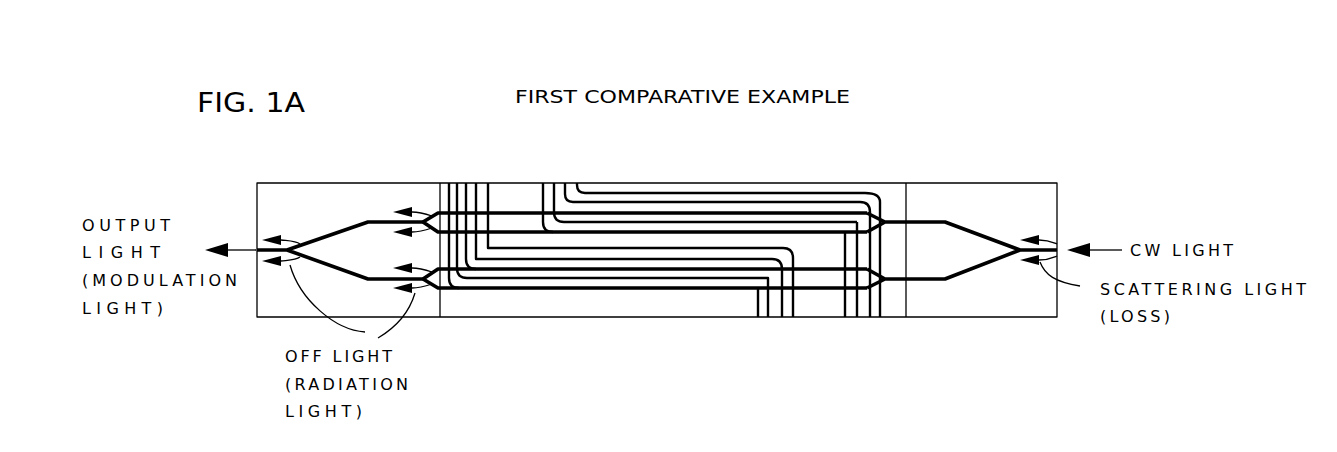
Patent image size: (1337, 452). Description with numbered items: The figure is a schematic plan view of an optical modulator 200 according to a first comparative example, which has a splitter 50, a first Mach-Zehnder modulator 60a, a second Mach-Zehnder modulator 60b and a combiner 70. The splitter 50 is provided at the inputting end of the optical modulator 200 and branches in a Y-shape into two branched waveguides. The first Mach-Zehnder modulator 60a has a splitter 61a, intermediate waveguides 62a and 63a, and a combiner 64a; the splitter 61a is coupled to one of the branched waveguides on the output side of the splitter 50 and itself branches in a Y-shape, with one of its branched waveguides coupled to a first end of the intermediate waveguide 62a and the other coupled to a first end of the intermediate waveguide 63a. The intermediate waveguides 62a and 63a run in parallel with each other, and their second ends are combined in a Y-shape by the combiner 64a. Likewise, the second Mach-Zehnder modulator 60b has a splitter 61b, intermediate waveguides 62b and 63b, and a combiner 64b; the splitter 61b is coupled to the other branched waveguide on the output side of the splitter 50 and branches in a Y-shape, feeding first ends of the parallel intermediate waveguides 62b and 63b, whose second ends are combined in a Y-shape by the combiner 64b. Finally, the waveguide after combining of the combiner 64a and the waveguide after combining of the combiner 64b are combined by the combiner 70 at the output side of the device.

The optical modulator 200 is at (1108, 123).
The combiner 70 is at (338, 222).
The splitter 50 is at (1005, 235).
The first Mach-Zehnder modulator 60a is at (864, 170).
The second Mach-Zehnder modulator 60b is at (622, 298).
The splitter 61a is at (888, 218).
The splitter 61b is at (885, 282).
The intermediate waveguide 62a is at (543, 205).
The intermediate waveguide 62b is at (838, 272).
The intermediate waveguide 63a is at (512, 232).
The intermediate waveguide 63b is at (810, 290).
The combiner 64a is at (437, 210).
The combiner 64b is at (413, 290).